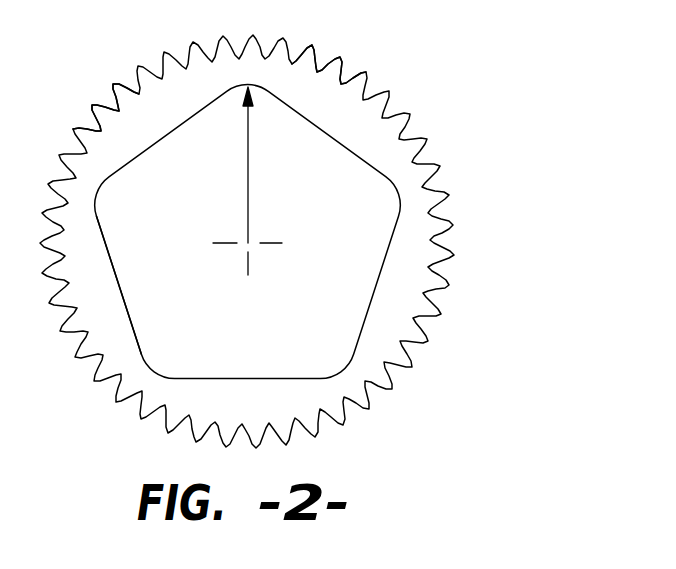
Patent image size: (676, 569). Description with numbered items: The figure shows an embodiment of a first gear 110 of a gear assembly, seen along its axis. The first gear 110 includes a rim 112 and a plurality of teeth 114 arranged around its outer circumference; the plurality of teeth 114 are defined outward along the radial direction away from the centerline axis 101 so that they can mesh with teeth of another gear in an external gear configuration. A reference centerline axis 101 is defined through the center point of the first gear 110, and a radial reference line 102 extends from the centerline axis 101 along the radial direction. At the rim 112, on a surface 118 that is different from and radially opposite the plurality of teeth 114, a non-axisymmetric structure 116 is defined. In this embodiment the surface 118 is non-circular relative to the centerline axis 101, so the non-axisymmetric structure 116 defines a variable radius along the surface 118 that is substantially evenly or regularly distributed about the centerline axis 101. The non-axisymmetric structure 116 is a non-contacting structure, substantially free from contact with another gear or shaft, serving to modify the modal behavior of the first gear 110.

The first gear 110 is at (438, 84).
The rim 112 is at (344, 78).
The plurality of teeth 114 is at (102, 92).
The non-axisymmetric structure 116 is at (145, 147).
The surface 118 is at (120, 292).
The reference centerline axis 101 is at (250, 243).
The radial reference line 102 is at (252, 199).